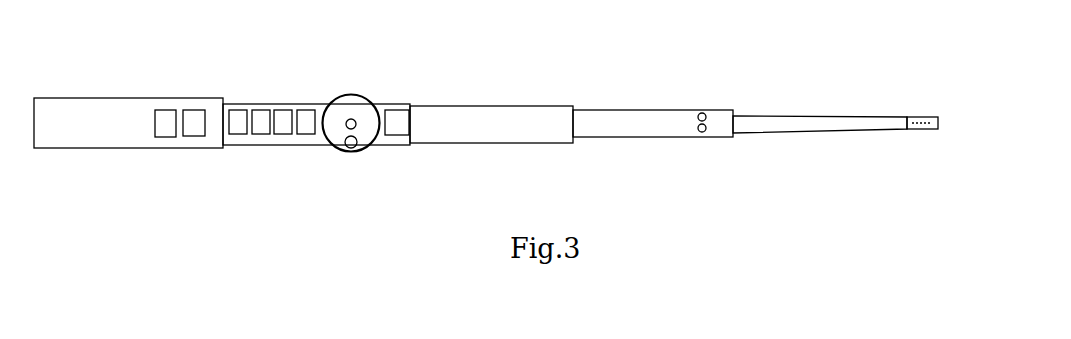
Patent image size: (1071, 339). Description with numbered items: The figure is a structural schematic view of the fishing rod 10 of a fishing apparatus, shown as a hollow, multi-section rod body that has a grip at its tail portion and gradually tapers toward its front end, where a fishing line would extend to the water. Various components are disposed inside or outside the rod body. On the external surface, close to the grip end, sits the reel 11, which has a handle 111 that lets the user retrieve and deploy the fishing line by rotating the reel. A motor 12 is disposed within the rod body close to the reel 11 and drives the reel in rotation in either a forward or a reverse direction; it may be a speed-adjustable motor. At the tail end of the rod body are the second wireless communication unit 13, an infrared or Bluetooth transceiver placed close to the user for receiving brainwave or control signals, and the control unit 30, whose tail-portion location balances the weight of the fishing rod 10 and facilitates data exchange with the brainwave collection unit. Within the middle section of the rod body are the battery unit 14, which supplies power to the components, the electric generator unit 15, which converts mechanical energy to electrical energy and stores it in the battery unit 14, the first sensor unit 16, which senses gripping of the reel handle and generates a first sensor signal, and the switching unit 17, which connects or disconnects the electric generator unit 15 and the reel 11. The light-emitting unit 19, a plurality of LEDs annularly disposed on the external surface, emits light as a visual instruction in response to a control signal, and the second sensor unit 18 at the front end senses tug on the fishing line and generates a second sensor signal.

The fishing rod 10 is at (572, 76).
The reel 11 is at (354, 110).
The handle 111 is at (353, 147).
The motor 12 is at (398, 110).
The second wireless communication unit 13 is at (158, 111).
The battery unit 14 is at (240, 111).
The electric generator unit 15 is at (260, 134).
The first sensor unit 16 is at (285, 110).
The switching unit 17 is at (307, 134).
The second sensor unit 18 is at (912, 118).
The light-emitting unit 19 is at (702, 113).
The control unit 30 is at (192, 111).